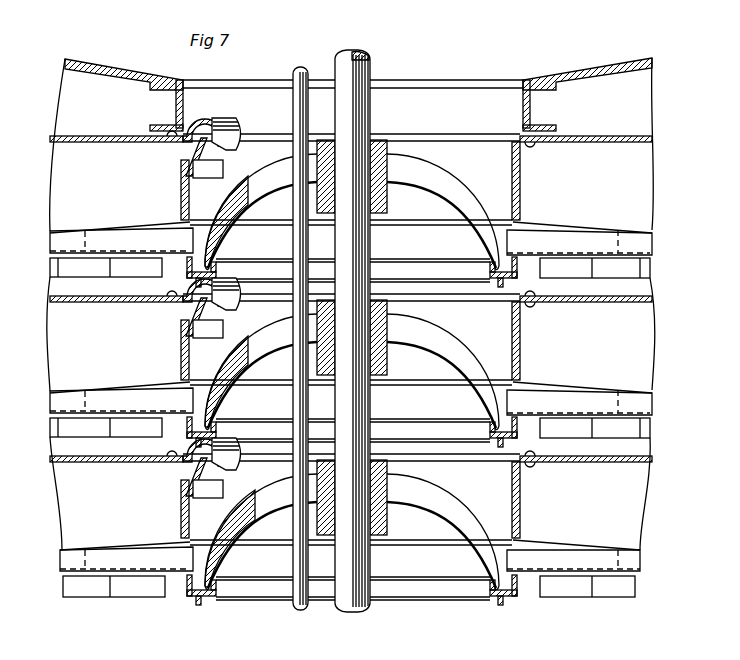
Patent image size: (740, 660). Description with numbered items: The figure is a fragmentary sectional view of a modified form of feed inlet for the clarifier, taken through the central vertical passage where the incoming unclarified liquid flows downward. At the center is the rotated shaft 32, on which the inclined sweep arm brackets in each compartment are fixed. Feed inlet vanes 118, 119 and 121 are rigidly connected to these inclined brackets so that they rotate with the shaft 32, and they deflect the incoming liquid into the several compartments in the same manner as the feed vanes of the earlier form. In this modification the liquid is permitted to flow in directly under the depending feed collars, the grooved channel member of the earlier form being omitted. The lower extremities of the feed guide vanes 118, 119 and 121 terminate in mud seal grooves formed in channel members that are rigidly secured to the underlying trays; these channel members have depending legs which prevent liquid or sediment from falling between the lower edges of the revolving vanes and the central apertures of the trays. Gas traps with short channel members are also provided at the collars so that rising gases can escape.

The shaft 32 is at (357, 244).
The feed inlet vane 118 is at (223, 247).
The feed inlet vane 119 is at (236, 382).
The feed inlet vane 121 is at (231, 539).